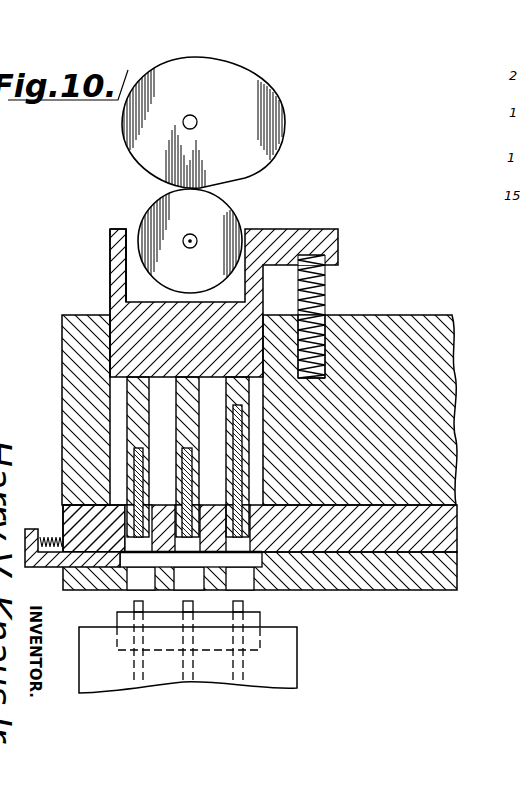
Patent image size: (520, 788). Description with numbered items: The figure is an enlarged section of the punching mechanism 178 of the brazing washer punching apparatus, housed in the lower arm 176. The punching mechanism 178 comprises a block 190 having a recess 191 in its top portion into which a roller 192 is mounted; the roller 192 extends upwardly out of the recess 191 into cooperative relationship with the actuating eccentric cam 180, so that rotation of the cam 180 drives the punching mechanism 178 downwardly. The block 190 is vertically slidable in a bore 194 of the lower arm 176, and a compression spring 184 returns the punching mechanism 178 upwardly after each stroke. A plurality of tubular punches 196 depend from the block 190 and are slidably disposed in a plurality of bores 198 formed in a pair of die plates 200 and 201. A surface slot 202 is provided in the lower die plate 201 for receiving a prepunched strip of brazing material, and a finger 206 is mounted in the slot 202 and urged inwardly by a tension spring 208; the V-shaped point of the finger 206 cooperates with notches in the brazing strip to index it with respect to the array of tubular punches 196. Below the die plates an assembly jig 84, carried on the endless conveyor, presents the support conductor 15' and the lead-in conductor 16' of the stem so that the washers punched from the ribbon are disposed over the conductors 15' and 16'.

The actuating eccentric cam 180 is at (229, 74).
The roller 192 is at (232, 213).
The punching mechanism 178 is at (110, 231).
The recess 191 is at (130, 230).
The block 190 is at (110, 291).
The bore 194 is at (114, 421).
The lower arm 176 is at (398, 315).
The compression spring 184 is at (322, 306).
The tubular punches 196 is at (230, 420).
The bores 198 is at (243, 540).
The die plate 200 is at (457, 527).
The lower die plate 201 is at (457, 572).
The surface slot 202 is at (125, 550).
The finger 206 is at (55, 567).
The tension spring 208 is at (52, 535).
The assembly jig 84 is at (297, 646).
The support conductor 15' is at (163, 639).
The lead-in conductor 16' is at (254, 639).